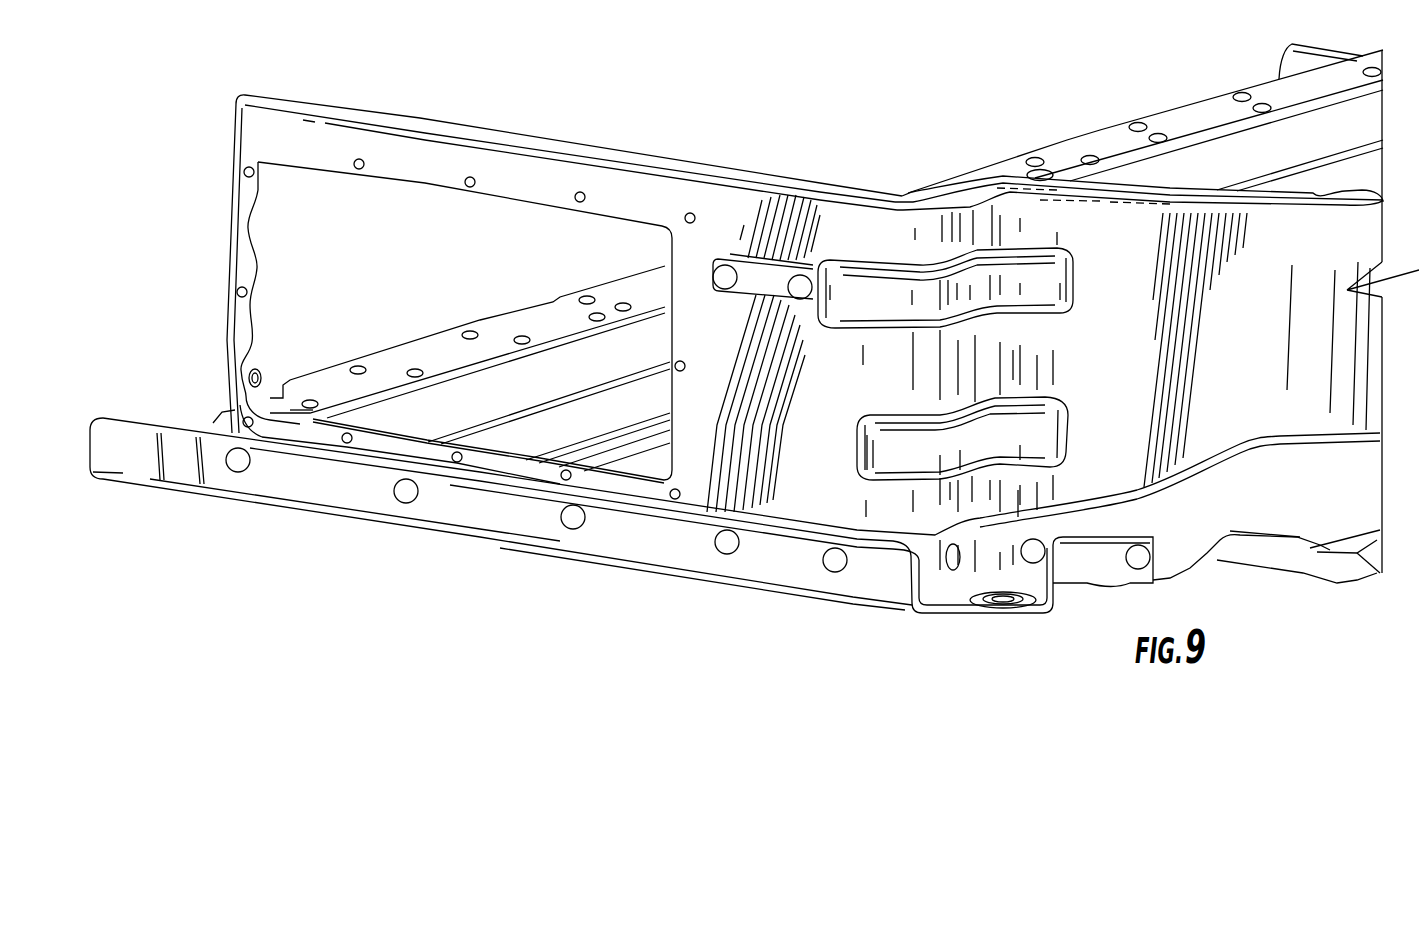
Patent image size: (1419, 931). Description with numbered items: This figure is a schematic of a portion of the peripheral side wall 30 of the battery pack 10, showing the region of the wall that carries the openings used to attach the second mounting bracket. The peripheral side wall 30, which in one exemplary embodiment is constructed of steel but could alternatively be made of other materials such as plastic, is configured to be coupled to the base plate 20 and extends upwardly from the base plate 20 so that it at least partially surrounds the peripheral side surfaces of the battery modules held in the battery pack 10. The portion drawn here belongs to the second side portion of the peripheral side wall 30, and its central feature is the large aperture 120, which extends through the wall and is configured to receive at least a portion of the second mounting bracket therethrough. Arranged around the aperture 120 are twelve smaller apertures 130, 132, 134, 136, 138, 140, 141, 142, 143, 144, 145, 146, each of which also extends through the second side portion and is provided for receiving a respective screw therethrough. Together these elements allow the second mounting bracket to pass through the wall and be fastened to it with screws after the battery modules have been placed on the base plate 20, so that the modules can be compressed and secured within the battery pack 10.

The battery pack 10 is at (990, 95).
The base plate 20 is at (977, 537).
The peripheral side wall 30 is at (786, 512).
The aperture 120 is at (508, 213).
The aperture 130 is at (695, 213).
The aperture 132 is at (585, 194).
The aperture 134 is at (475, 180).
The aperture 136 is at (365, 162).
The aperture 138 is at (245, 173).
The aperture 140 is at (237, 296).
The aperture 141 is at (248, 427).
The aperture 142 is at (347, 443).
The aperture 143 is at (456, 462).
The aperture 144 is at (565, 480).
The aperture 145 is at (674, 499).
The aperture 146 is at (685, 371).